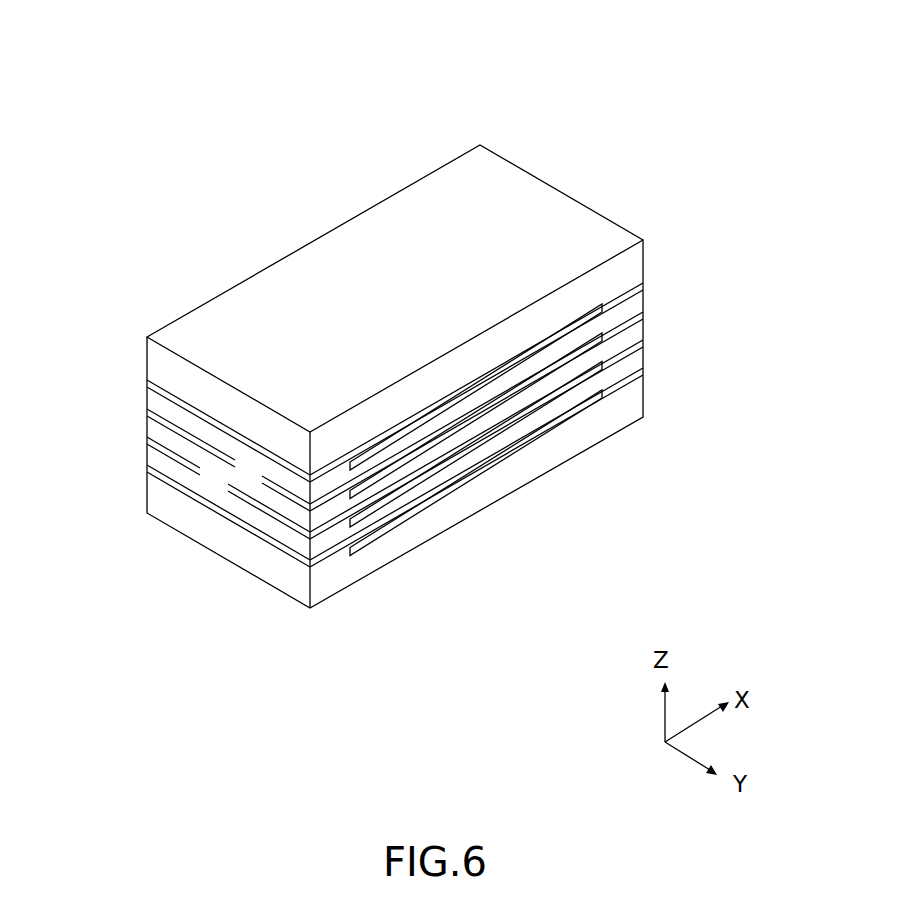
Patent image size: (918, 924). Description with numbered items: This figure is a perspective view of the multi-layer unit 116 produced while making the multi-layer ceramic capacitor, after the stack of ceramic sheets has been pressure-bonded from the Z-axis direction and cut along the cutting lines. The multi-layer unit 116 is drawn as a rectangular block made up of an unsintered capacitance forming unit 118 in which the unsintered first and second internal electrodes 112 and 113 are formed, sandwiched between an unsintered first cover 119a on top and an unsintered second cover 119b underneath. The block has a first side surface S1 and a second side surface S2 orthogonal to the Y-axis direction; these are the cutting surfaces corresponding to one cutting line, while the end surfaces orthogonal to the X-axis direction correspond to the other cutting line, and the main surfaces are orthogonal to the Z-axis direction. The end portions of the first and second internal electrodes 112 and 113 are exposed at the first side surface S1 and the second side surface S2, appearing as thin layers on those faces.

The multi-layer unit 116 is at (546, 120).
The first internal electrodes 112 is at (147, 380).
The second internal electrodes 113 is at (645, 300).
The capacitance forming unit 118 is at (254, 488).
The first cover 119a is at (255, 416).
The second cover 119b is at (255, 552).
The first side surface S1 is at (147, 493).
The second side surface S2 is at (496, 486).